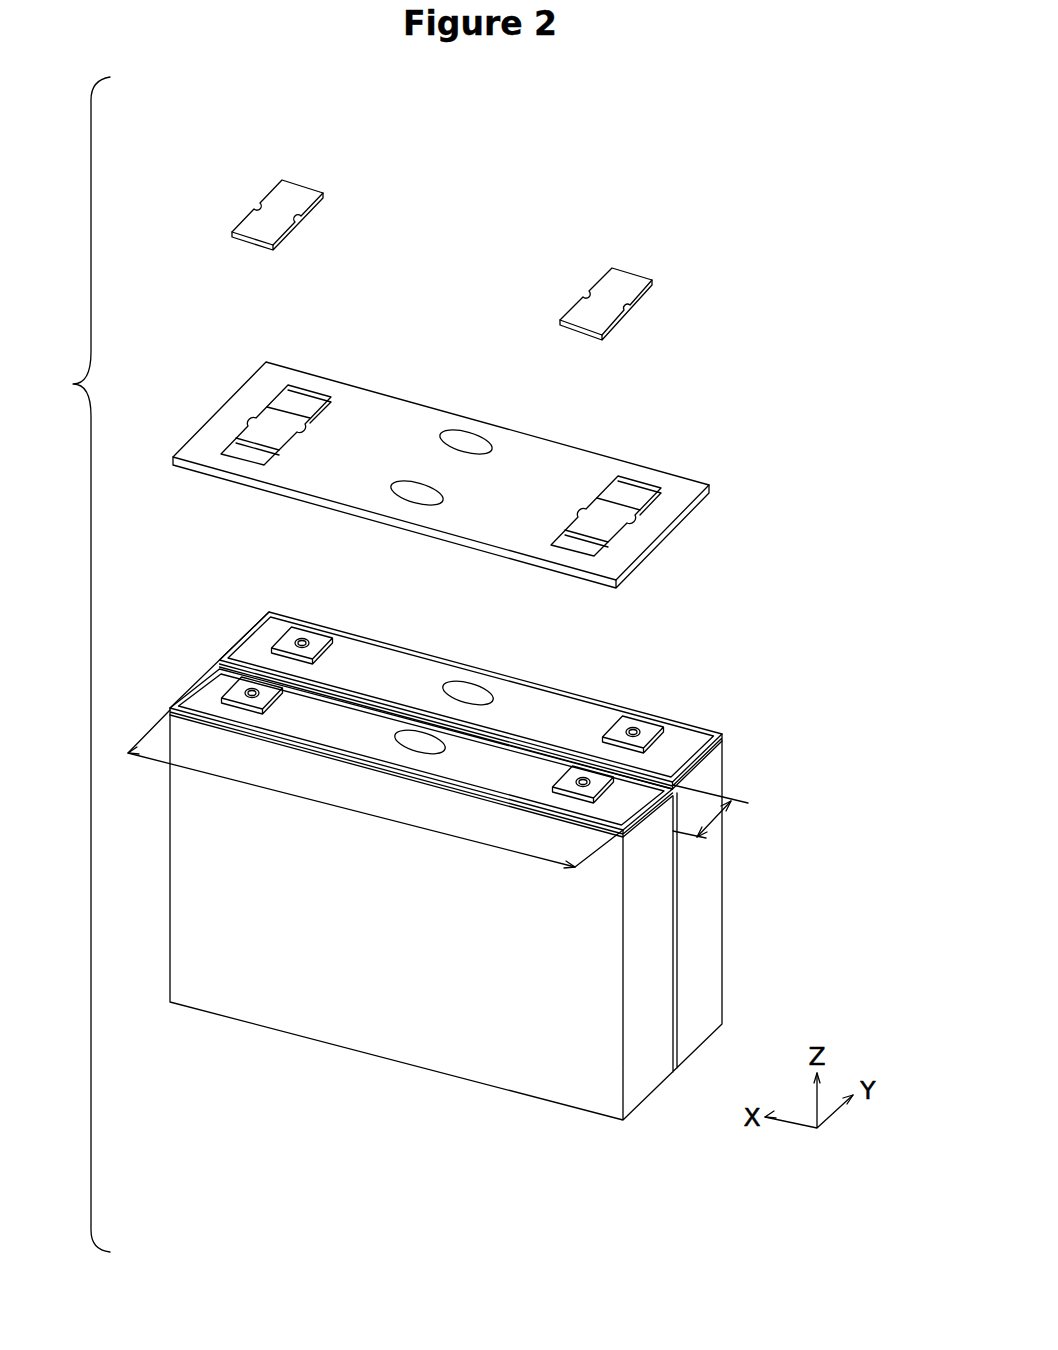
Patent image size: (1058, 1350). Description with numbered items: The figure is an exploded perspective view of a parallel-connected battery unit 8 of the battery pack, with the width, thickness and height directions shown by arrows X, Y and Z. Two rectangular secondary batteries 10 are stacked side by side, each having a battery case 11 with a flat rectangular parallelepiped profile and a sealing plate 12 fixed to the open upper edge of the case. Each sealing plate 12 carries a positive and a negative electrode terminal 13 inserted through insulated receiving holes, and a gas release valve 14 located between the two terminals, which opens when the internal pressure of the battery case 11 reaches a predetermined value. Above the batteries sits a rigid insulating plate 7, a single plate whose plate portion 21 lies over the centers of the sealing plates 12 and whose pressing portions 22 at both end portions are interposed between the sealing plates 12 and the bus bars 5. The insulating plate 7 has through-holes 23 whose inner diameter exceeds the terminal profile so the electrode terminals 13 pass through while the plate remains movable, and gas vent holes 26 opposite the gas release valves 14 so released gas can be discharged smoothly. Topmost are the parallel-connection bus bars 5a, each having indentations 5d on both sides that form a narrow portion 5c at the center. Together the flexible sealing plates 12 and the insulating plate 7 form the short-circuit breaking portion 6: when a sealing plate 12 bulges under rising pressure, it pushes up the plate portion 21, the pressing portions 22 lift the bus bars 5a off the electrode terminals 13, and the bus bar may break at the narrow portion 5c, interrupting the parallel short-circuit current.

The bus bar 5 is at (450, 211).
The parallel-connection bus bar 5a is at (450, 232).
The narrow portion 5c is at (450, 232).
The indentation 5d is at (245, 202).
The short-circuit breaking portion 6 is at (470, 765).
The insulating plate 7 is at (426, 452).
The parallel-connected battery unit 8 is at (472, 905).
The rectangular secondary battery 10 is at (472, 883).
The battery case 11 is at (371, 949).
The sealing plate 12 is at (437, 706).
The electrode terminal 13 is at (300, 645).
The gas release valve 14 is at (462, 693).
The plate portion 21 is at (426, 452).
The pressing portion 22 is at (426, 452).
The through-hole 23 is at (315, 385).
The gas vent hole 26 is at (464, 425).